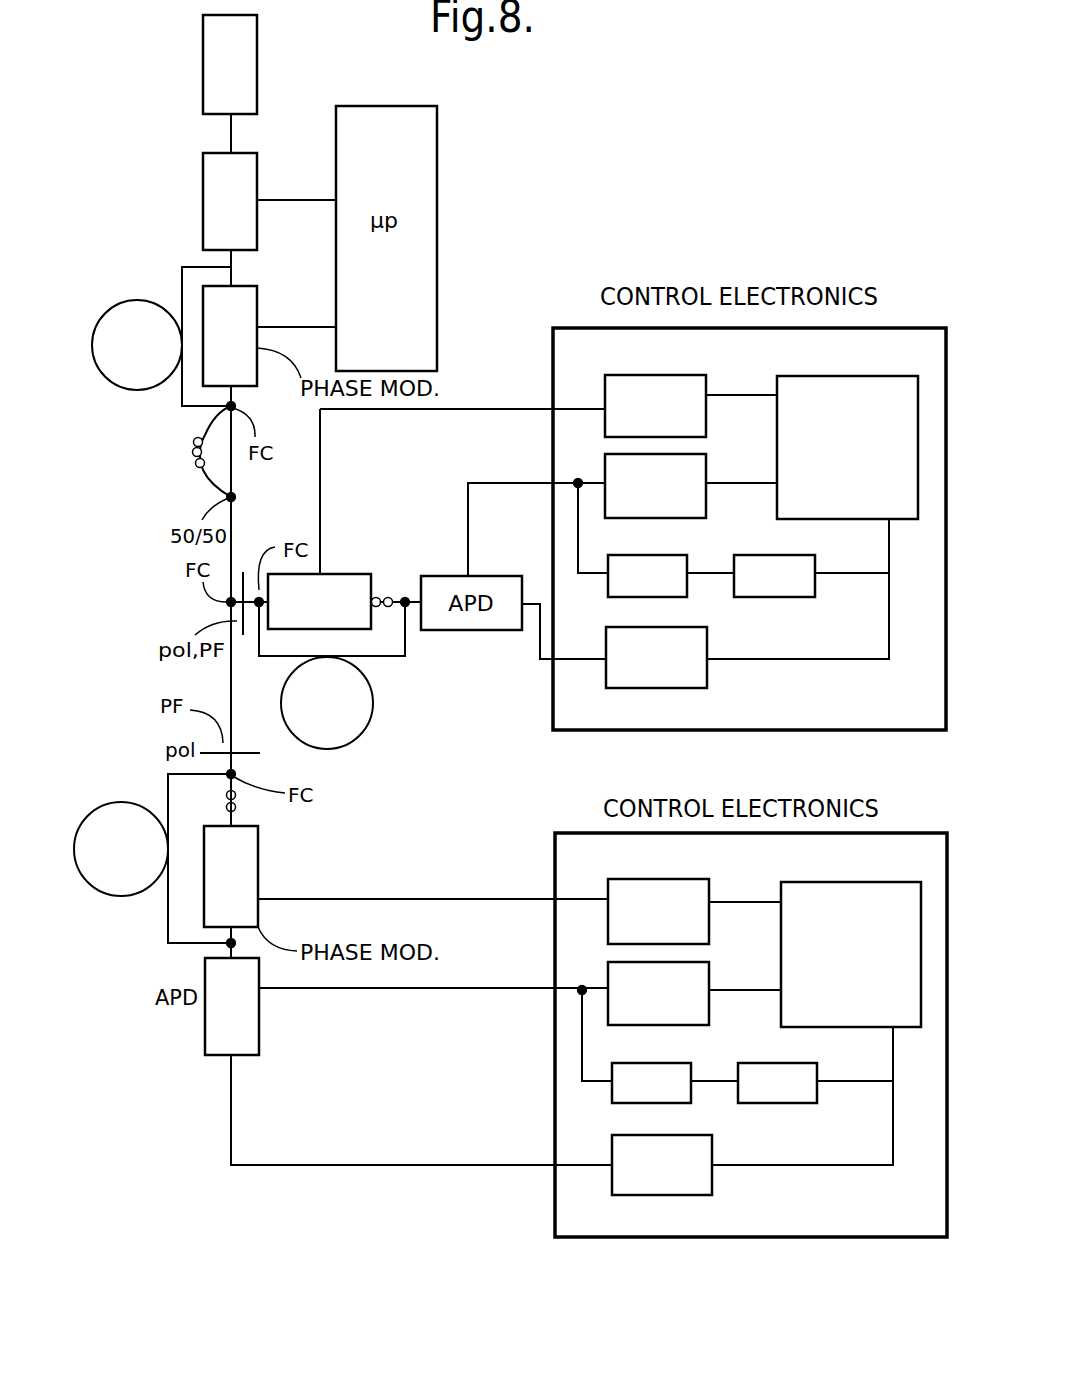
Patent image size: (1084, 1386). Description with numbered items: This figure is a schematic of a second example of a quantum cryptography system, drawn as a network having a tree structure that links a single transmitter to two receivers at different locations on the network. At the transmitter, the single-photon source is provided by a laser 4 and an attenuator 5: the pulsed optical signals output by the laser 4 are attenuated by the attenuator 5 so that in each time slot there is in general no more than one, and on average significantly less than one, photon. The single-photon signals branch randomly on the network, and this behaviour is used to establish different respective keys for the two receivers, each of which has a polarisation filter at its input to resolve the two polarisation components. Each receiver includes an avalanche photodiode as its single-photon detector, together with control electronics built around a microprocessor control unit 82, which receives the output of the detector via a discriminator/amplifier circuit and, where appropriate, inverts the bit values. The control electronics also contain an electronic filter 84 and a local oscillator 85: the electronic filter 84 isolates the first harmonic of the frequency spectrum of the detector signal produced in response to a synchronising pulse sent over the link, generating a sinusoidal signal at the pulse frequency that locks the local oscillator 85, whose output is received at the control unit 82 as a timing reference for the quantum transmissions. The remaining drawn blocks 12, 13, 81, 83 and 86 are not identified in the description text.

The laser 4 is at (230, 64).
The attenuator 5 is at (230, 201).
The phase modulator 12 is at (287, 750).
The fibre connector 13 is at (280, 821).
The timing circuit 81 is at (658, 911).
The control unit 82 is at (849, 701).
The discriminator 83 is at (657, 739).
The electronic filter 84 is at (649, 829).
The local oscillator 85 is at (775, 829).
The driver 86 is at (658, 785).